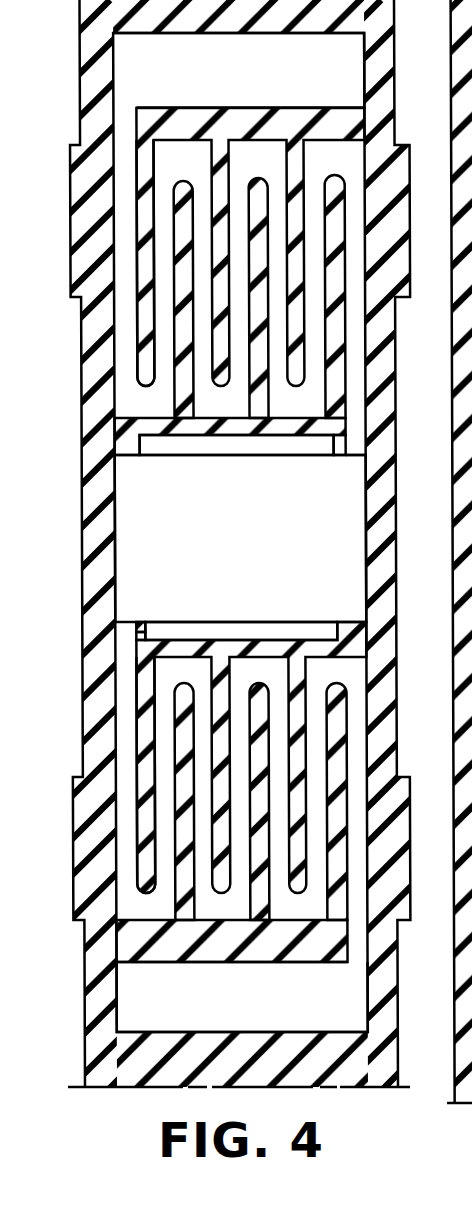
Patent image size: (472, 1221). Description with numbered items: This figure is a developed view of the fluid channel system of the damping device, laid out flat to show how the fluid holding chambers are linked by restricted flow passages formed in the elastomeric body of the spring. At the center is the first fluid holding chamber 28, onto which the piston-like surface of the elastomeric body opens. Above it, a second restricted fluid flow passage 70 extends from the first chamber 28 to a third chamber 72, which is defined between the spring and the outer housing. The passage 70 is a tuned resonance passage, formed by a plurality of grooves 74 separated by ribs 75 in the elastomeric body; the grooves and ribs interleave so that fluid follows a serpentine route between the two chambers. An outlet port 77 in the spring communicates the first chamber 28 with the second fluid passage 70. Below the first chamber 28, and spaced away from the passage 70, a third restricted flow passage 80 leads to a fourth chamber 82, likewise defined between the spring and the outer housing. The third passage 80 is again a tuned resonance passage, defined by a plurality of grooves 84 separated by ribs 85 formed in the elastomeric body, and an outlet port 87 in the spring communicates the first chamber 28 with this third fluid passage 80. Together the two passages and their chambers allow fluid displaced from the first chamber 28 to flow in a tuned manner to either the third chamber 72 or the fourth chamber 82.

The first fluid holding chamber 28 is at (247, 546).
The second restricted fluid flow passage 70 is at (231, 281).
The third chamber 72 is at (216, 84).
The grooves 74 is at (122, 271).
The ribs 75 is at (142, 219).
The outlet port 77 is at (349, 436).
The third restricted flow passage 80 is at (196, 792).
The fourth chamber 82 is at (219, 1012).
The grooves 84 is at (125, 818).
The ribs 85 is at (143, 731).
The outlet port 87 is at (125, 638).